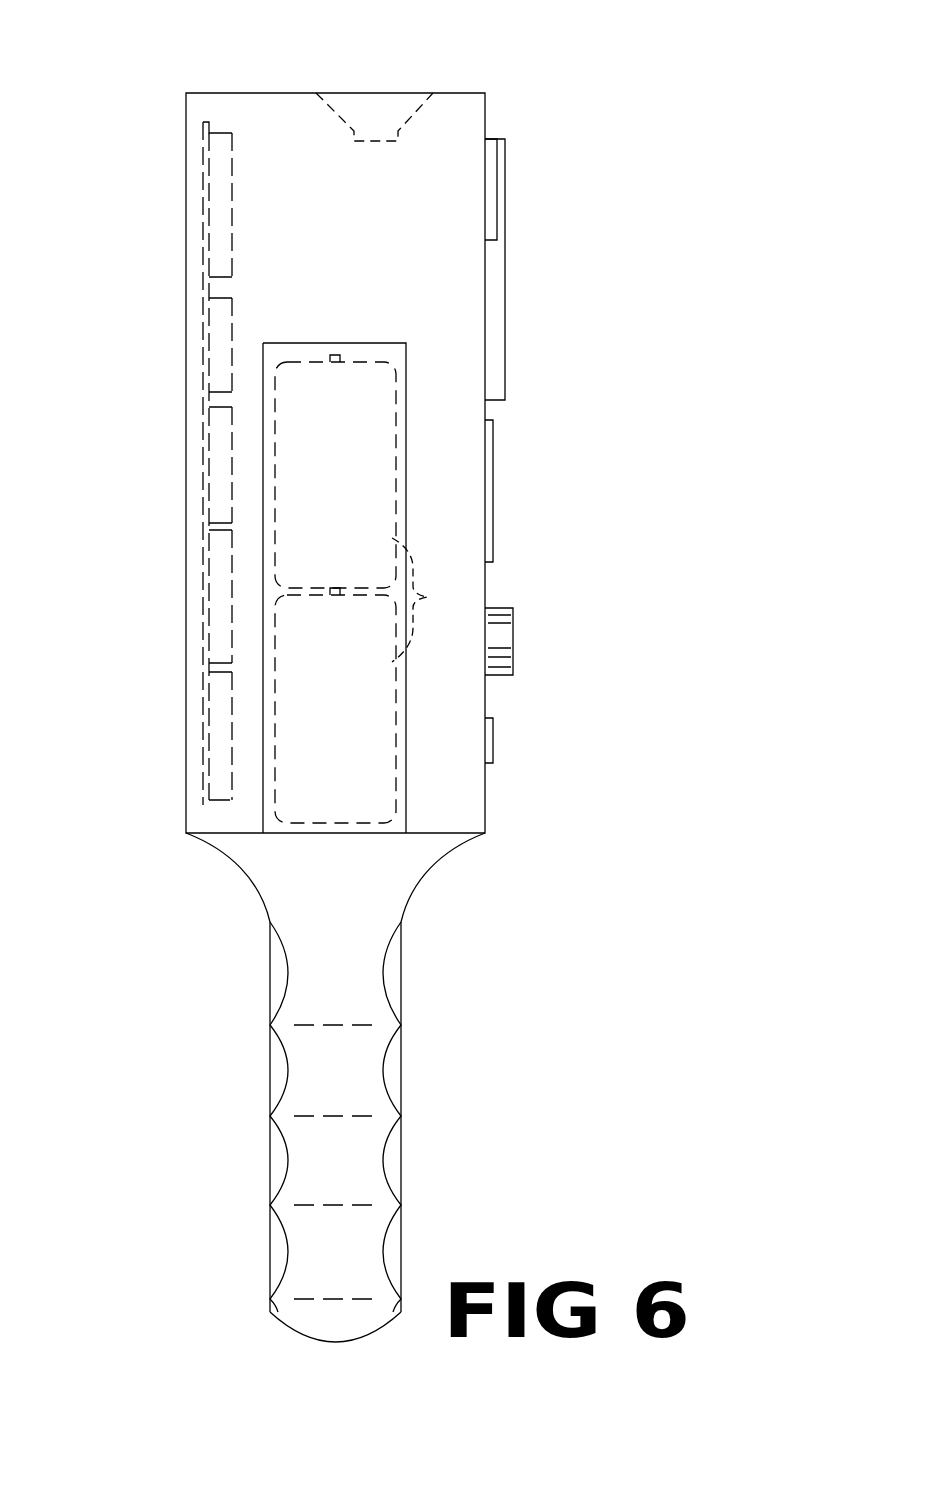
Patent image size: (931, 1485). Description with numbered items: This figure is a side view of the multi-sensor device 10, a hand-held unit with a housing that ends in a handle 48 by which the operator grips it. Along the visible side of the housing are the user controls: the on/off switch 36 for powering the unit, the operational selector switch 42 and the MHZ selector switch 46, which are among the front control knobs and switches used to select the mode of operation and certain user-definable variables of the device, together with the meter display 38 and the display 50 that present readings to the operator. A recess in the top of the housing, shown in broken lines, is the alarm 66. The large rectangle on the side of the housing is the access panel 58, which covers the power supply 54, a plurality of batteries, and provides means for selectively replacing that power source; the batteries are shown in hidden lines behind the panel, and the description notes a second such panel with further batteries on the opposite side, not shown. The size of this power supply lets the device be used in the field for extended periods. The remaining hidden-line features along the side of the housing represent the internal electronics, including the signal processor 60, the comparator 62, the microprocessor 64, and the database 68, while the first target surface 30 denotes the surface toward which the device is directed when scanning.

The multi-sensor device 10 is at (148, 110).
The first target surface 30 is at (282, 92).
The on/off switch 36 is at (490, 204).
The meter display 38 is at (492, 373).
The operational selector switch 42 is at (491, 760).
The MHZ selector switch 46 is at (513, 667).
The handle 48 is at (298, 1160).
The display 50 is at (490, 531).
The power supply 54 is at (433, 597).
The access panel 58 is at (375, 343).
The signal processor 60 is at (225, 247).
The comparator 62 is at (222, 348).
The microprocessor 64 is at (222, 604).
The alarm 66 is at (386, 112).
The database 68 is at (220, 696).